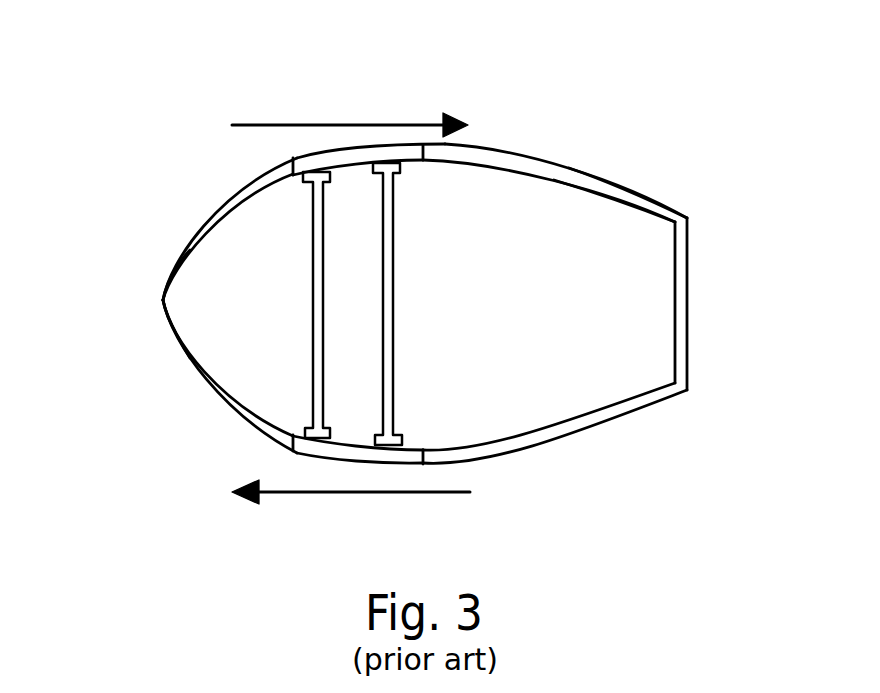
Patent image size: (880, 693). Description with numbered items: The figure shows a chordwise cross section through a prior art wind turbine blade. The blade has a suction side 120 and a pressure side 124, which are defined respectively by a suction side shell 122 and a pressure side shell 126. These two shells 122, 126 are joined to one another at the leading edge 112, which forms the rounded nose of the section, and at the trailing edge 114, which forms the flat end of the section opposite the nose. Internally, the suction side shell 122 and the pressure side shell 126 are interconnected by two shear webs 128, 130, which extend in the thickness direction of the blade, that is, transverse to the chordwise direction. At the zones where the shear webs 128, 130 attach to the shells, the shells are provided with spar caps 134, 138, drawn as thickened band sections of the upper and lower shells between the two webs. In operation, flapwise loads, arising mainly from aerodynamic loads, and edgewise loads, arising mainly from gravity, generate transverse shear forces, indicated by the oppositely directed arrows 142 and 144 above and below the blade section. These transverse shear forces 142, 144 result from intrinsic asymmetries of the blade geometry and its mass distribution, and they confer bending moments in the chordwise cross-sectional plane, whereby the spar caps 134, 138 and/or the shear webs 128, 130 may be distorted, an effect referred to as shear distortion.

The leading edge 112 is at (162, 303).
The trailing edge 114 is at (687, 273).
The suction side 120 is at (495, 146).
The suction side shell 122 is at (615, 192).
The pressure side 124 is at (510, 460).
The pressure side shell 126 is at (217, 402).
The shear web 128 is at (312, 303).
The shear web 130 is at (387, 298).
The spar cap 134 is at (413, 161).
The spar cap 138 is at (358, 450).
The transverse shear force arrow 142 is at (350, 122).
The transverse shear force arrow 144 is at (357, 497).